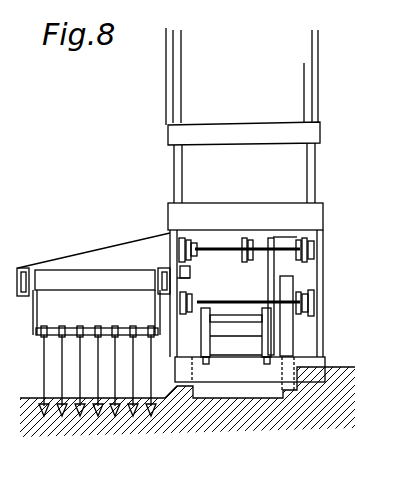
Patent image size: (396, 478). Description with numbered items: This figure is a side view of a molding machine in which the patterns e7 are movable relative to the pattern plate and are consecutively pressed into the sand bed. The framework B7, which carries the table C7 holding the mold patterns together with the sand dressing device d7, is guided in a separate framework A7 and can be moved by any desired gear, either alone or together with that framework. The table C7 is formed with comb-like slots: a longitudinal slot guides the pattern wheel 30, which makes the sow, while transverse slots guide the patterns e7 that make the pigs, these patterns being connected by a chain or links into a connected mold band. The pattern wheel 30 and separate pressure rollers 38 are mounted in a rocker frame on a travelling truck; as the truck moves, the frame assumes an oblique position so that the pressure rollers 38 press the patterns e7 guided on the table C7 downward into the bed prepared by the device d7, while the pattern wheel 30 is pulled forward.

The separate framework A7 is at (170, 42).
The framework B7 is at (245, 201).
The table C7 is at (250, 373).
The sand dressing device d7 is at (60, 372).
The patterns e7 is at (238, 394).
The pattern wheel 30 is at (287, 345).
The pressure rollers 38 is at (208, 340).